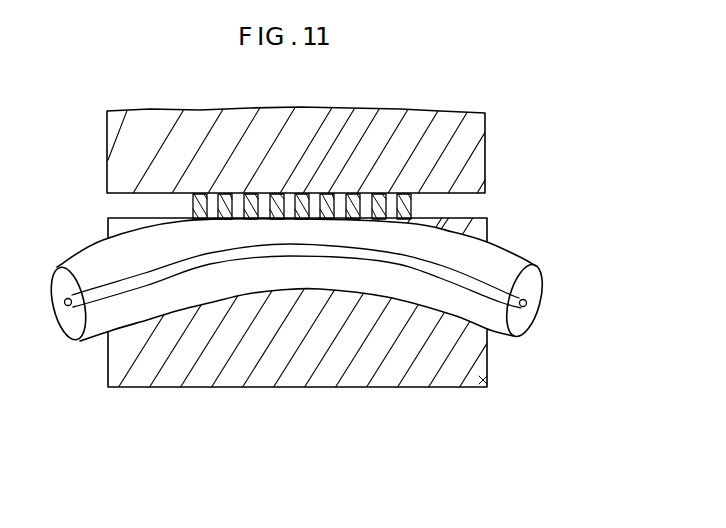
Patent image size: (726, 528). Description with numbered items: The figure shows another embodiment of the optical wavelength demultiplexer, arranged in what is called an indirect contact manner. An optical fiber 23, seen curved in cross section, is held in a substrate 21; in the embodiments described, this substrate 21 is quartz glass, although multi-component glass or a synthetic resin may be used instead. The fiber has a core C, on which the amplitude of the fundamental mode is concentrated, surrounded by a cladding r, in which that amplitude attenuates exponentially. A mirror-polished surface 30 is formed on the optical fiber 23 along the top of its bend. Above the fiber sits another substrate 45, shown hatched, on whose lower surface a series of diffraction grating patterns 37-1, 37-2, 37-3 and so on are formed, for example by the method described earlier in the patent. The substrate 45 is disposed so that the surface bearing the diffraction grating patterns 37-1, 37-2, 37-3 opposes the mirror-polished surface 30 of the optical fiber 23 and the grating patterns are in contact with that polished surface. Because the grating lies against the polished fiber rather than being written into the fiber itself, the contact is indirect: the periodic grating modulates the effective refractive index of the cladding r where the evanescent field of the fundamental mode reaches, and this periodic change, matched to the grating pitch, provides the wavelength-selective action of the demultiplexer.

The substrate 45 is at (477, 146).
The substrate 21 is at (486, 385).
The diffraction grating pattern 37-1 is at (198, 194).
The diffraction grating pattern 37-2 is at (227, 194).
The diffraction grating pattern 37-3 is at (346, 165).
The optical fiber 23 is at (511, 264).
The mirror-polished surface 30 is at (290, 222).
The cladding r is at (532, 282).
The core C is at (527, 305).